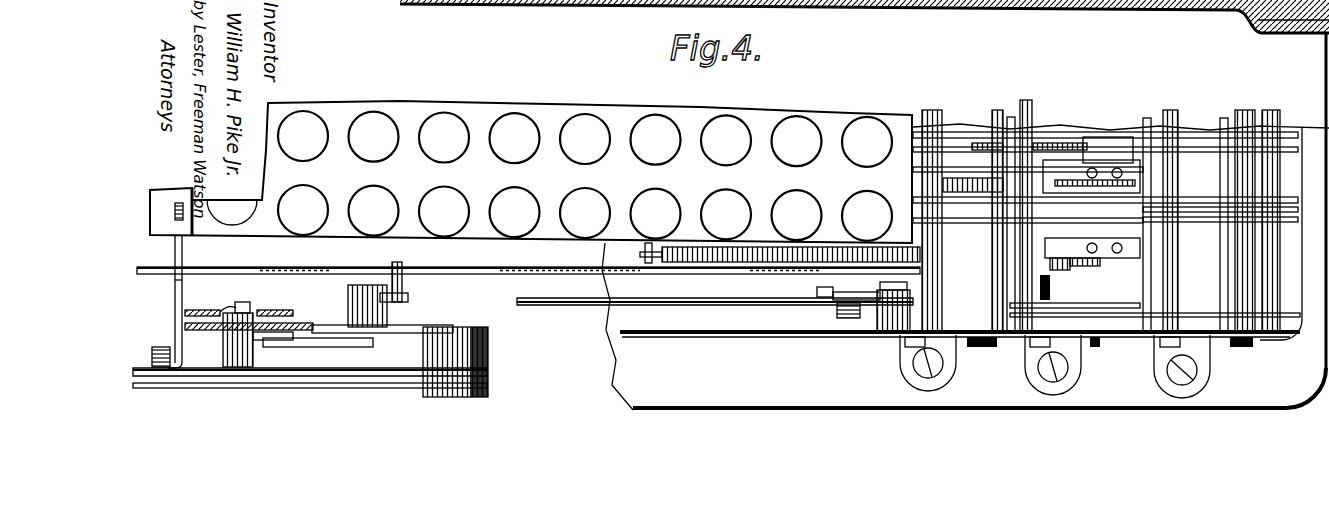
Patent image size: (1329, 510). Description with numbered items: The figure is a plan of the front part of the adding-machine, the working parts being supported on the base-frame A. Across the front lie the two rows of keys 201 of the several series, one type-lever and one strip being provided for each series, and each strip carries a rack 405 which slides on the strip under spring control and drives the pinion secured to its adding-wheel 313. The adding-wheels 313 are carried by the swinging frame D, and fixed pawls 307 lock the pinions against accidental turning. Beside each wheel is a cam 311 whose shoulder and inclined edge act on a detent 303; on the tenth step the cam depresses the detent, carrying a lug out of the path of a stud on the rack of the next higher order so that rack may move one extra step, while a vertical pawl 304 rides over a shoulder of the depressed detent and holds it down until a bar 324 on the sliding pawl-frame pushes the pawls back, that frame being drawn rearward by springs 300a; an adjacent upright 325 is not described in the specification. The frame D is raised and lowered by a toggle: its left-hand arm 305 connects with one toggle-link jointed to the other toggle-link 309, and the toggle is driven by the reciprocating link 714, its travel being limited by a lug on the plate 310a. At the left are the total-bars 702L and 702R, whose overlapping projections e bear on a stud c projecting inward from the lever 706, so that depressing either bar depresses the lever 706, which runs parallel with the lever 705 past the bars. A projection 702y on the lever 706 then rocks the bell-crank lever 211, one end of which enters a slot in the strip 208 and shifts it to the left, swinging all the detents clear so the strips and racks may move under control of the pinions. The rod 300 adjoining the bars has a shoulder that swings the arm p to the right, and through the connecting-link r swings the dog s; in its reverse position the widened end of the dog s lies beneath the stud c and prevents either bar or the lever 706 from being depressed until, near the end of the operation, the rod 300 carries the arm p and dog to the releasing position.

The keys 201 is at (527, 122).
The strip 208 is at (190, 233).
The bell-crank lever 211 is at (176, 298).
The rod 300 is at (514, 275).
The spring 300a is at (692, 263).
The reciprocating link 714 is at (573, 304).
The plate 310a is at (817, 300).
The toggle-link 309 is at (873, 293).
The left total-bar 702L is at (249, 305).
The right total-bar 702R is at (332, 304).
The projection 702y is at (166, 336).
The projection e is at (252, 310).
The arm p is at (404, 297).
The stud c is at (223, 357).
The dog s is at (284, 340).
The connecting-link r is at (327, 341).
The lever 705 is at (280, 383).
The lever 706 is at (407, 377).
The base-frame A is at (489, 0).
The swinging frame D is at (1193, 140).
The post 325 is at (997, 110).
The bar 324 is at (1028, 103).
The rack 405 is at (1062, 140).
The fixed pawl 307 is at (1107, 147).
The cam 311 is at (1082, 258).
The adding-wheel 313 is at (1137, 257).
The left-hand arm 305 is at (955, 307).
The vertical pawl 304 is at (1020, 323).
The detent 303 is at (1043, 300).